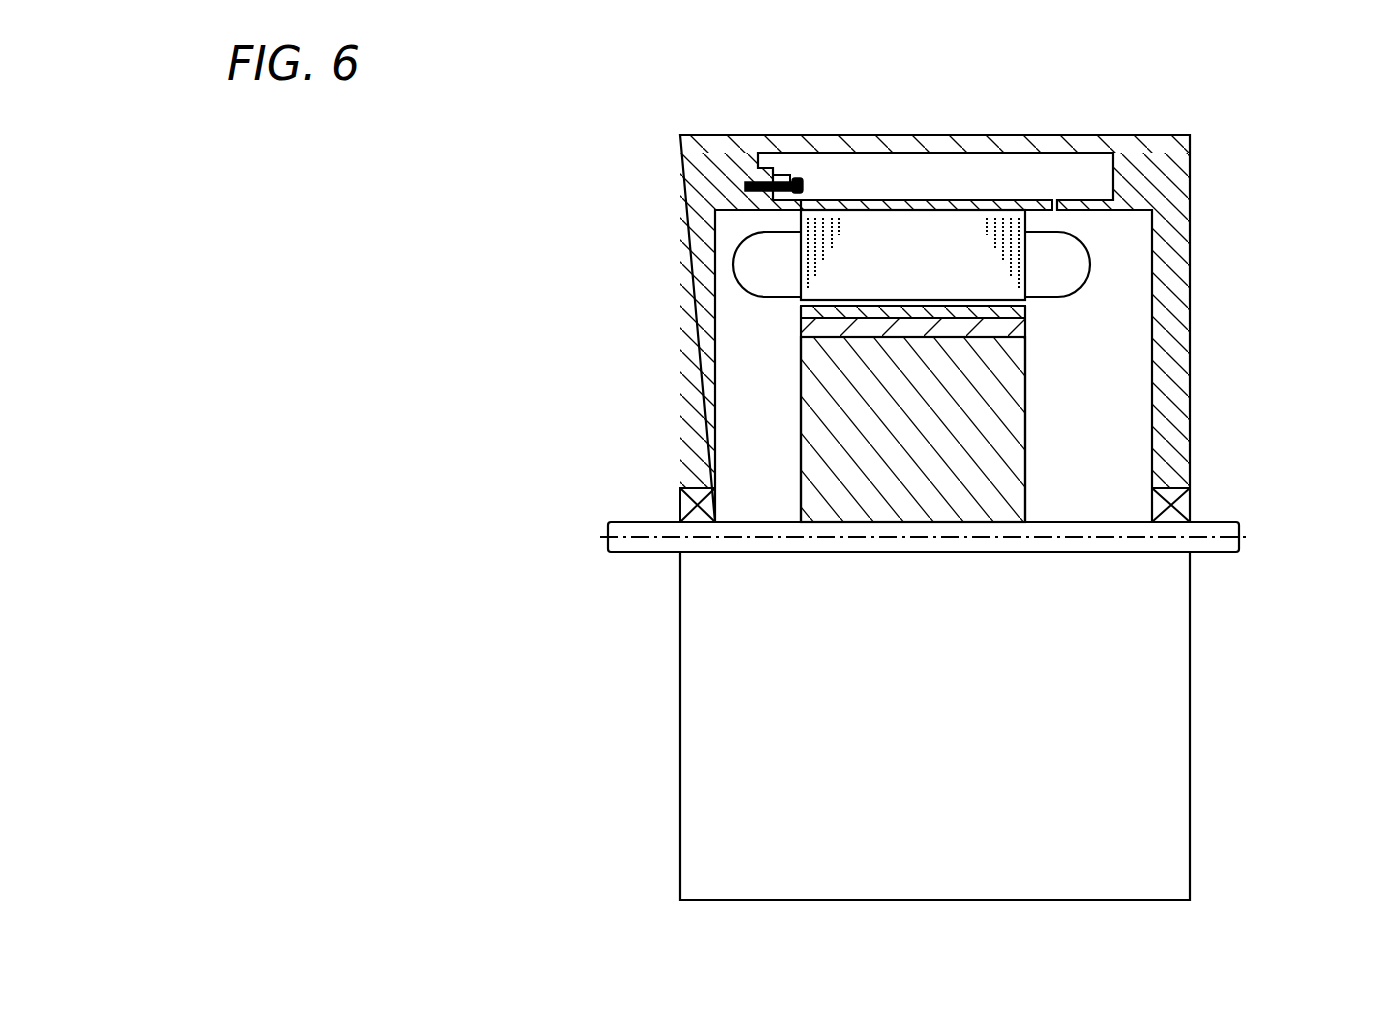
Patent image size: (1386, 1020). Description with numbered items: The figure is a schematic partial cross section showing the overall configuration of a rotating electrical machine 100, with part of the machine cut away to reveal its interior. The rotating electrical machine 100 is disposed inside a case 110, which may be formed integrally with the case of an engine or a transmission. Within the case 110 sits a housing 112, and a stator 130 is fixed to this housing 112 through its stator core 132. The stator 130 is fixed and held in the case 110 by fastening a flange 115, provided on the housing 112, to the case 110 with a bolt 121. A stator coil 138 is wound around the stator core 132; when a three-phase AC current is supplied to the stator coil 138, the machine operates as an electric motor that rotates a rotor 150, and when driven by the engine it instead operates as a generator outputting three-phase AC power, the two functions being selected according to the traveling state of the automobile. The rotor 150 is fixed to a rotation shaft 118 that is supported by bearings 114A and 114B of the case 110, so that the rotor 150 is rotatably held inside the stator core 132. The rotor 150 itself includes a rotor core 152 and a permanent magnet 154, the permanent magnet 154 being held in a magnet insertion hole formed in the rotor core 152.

The rotating electrical machine 100 is at (1036, 186).
The case 110 is at (694, 245).
The housing 112 is at (906, 200).
The bearing 114A is at (688, 503).
The bearing 114B is at (1186, 500).
The flange 115 is at (784, 176).
The rotation shaft 118 is at (630, 545).
The bolt 121 is at (753, 177).
The stator 130 is at (1098, 263).
The stator core 132 is at (832, 287).
The stator coil 138 is at (752, 260).
The rotor 150 is at (1036, 402).
The rotor core 152 is at (812, 455).
The permanent magnet 154 is at (1018, 326).